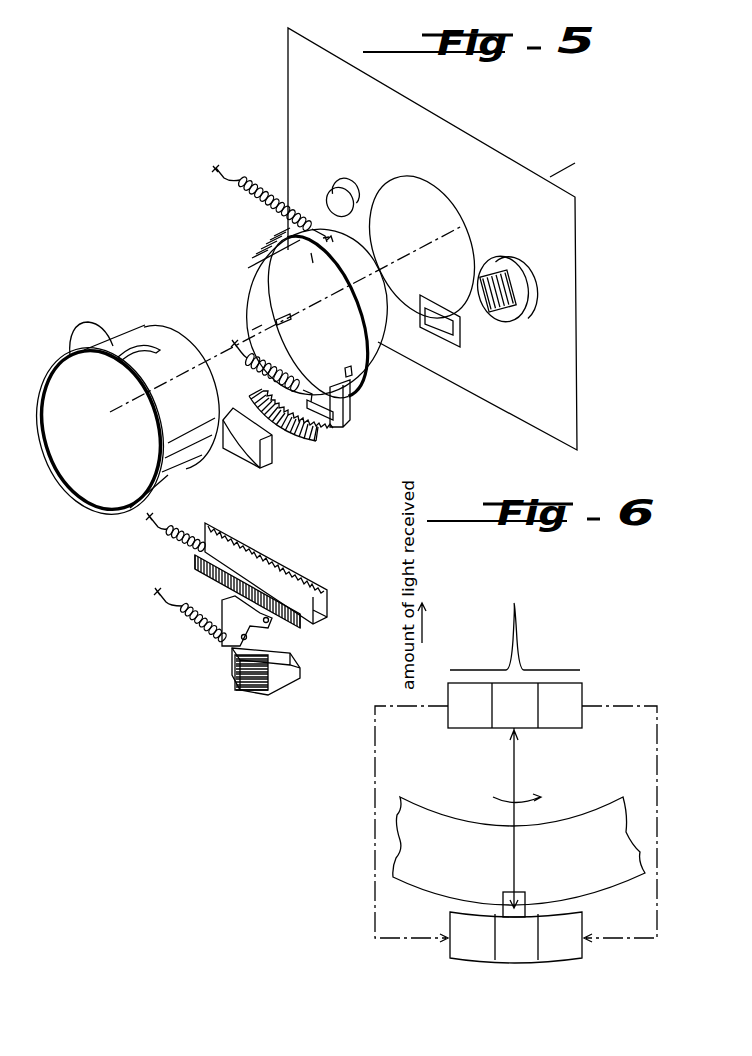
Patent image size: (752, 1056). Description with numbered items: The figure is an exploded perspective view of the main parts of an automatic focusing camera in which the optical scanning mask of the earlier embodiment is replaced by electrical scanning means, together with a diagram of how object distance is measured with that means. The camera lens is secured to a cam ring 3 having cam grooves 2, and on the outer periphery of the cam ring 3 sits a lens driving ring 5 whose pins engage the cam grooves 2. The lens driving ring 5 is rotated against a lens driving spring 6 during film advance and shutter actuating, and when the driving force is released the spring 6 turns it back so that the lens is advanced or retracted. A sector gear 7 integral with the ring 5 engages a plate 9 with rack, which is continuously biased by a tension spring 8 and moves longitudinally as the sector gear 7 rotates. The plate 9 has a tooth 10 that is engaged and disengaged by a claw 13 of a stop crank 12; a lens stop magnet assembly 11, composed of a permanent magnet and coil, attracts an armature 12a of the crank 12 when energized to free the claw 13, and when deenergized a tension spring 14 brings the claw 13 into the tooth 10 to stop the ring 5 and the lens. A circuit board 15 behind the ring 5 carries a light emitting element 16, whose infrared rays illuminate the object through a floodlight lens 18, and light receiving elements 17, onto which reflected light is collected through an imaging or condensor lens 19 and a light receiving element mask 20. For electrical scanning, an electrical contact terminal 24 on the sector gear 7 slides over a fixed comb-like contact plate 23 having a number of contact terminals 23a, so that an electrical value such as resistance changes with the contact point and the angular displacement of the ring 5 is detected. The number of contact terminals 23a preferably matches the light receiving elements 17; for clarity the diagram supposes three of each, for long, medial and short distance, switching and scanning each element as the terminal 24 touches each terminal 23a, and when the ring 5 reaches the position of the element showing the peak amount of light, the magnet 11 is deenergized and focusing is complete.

In FIG. 5, the cam grooves 2 is at (140, 340).
In FIG. 5, the cam ring 3 is at (126, 403).
In FIG. 5, the lens driving ring 5 is at (257, 288).
In FIG. 6, the lens driving ring 5 is at (582, 823).
In FIG. 5, the lens driving spring 6 is at (257, 203).
In FIG. 5, the sector gear 7 is at (345, 418).
In FIG. 5, the tension spring 8 is at (188, 552).
In FIG. 5, the plate with rack 9 is at (320, 600).
In FIG. 5, the tooth 10 is at (298, 628).
In FIG. 5, the lens stop magnet assembly 11 is at (285, 682).
In FIG. 5, the stop crank 12 is at (208, 640).
In FIG. 5, the armature 12a is at (232, 670).
In FIG. 5, the claw 13 is at (230, 597).
In FIG. 5, the tension spring 14 is at (186, 628).
In FIG. 5, the circuit board 15 is at (528, 182).
In FIG. 5, the light emitting element 16 is at (348, 185).
In FIG. 5, the light receiving elements 17 is at (500, 283).
In FIG. 6, the light receiving elements 17 is at (515, 705).
In FIG. 5, the floodlight lens 18 is at (97, 328).
In FIG. 5, the imaging or condensor lens 19 is at (252, 458).
In FIG. 5, the light receiving element mask 20 is at (458, 338).
In FIG. 5, the fixed comb-like contact plate 23 is at (320, 438).
In FIG. 5, the contact terminals 23a is at (273, 423).
In FIG. 6, the contact terminals 23a is at (467, 947).
In FIG. 5, the electrical contact terminal 24 is at (337, 420).
In FIG. 6, the electrical contact terminal 24 is at (527, 897).